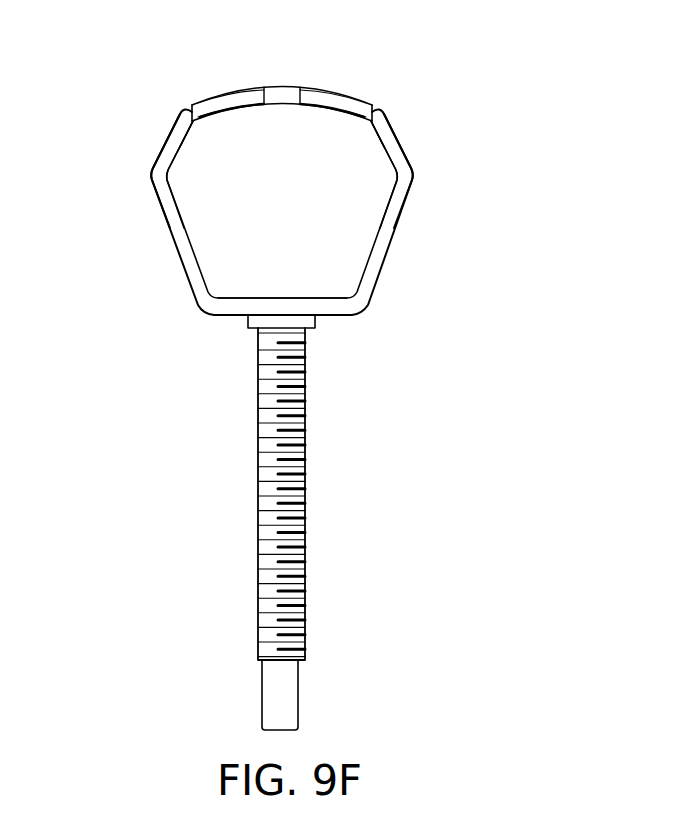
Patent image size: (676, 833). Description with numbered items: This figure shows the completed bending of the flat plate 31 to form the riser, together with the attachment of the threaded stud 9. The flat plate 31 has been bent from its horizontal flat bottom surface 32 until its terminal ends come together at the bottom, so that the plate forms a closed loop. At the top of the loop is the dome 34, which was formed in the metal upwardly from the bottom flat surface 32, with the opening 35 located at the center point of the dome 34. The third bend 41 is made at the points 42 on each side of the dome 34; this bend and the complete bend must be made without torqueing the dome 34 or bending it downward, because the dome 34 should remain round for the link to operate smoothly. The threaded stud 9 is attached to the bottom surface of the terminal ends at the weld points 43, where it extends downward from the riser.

The threaded stud 9 is at (305, 465).
The flat plate 31 is at (444, 211).
The horizontal flat bottom surface 32 is at (358, 268).
The dome 34 is at (342, 93).
The opening 35 is at (280, 87).
The third bend 41 is at (163, 137).
The bend points 42 is at (186, 133).
The weld points 43 is at (247, 317).